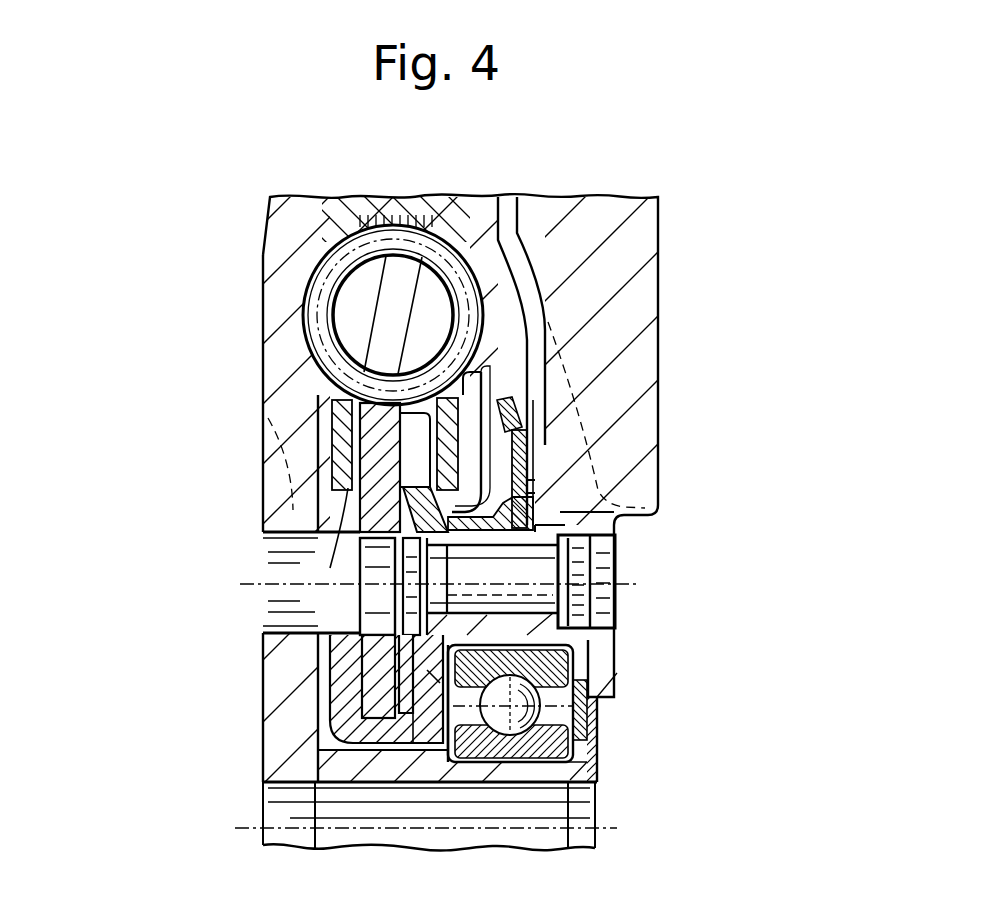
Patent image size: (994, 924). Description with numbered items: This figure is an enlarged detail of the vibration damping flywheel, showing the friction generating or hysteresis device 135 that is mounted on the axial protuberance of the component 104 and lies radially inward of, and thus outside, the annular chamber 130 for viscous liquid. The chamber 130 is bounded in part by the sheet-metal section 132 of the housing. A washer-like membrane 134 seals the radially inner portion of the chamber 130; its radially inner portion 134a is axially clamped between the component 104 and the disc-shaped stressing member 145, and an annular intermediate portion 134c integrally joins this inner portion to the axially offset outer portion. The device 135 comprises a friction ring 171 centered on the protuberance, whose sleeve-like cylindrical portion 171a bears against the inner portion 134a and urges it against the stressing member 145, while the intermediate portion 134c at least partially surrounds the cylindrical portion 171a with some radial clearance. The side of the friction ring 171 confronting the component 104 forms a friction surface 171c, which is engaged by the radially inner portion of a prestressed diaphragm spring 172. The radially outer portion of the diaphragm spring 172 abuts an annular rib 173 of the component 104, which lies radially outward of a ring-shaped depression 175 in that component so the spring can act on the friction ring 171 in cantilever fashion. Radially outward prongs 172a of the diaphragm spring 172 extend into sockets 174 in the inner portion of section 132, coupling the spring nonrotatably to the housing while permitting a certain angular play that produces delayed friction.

The component 104 is at (605, 218).
The section 132 is at (500, 287).
The annular chamber 130 is at (422, 343).
The sockets 174 is at (512, 394).
The prongs 172a is at (527, 435).
The annular rib 173 is at (535, 442).
The ring-shaped depression 175 is at (535, 483).
The friction generating device 135 is at (545, 498).
The diaphragm spring 172 is at (540, 520).
The friction surface 171c is at (598, 560).
The friction ring 171 is at (600, 632).
The cylindrical portion 171a is at (600, 632).
The membrane 134 is at (470, 446).
The intermediate portion 134c is at (495, 507).
The radially inner portion 134a is at (560, 556).
The stressing member 145 is at (362, 626).